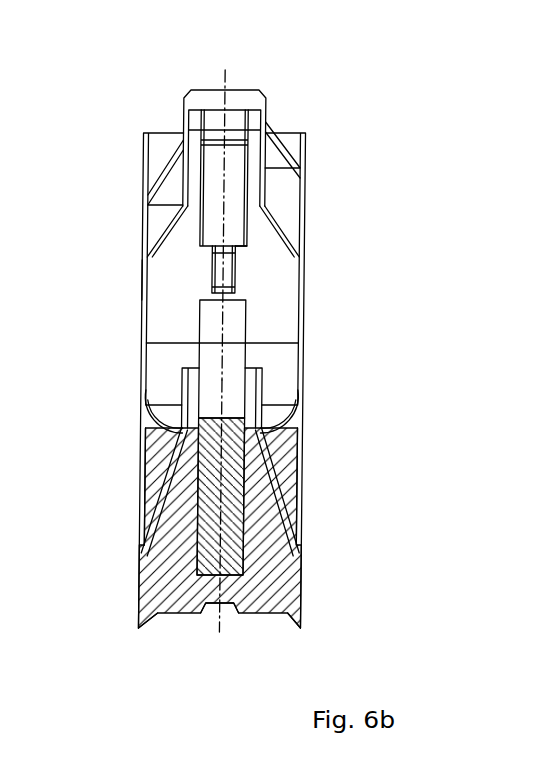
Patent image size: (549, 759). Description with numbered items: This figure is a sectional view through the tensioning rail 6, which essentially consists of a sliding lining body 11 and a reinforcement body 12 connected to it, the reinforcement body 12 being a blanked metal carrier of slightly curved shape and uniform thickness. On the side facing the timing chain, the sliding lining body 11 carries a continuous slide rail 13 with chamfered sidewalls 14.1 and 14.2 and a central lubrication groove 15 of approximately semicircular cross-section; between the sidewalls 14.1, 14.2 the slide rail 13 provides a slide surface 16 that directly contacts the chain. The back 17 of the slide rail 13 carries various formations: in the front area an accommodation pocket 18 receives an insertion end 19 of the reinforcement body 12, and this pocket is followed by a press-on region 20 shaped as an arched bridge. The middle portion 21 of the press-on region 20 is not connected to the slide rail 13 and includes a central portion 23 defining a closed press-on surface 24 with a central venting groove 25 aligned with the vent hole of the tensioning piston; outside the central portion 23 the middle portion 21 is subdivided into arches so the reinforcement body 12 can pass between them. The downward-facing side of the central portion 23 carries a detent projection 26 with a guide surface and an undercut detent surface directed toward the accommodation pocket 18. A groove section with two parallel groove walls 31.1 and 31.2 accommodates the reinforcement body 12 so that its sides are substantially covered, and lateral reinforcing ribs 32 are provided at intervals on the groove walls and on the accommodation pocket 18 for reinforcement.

The tensioning rail 6 is at (290, 125).
The sliding lining body 11 is at (309, 323).
The reinforcement body 12 is at (233, 497).
The slide rail 13 is at (307, 602).
The chamfered sidewall 14.1 is at (142, 622).
The chamfered sidewall 14.2 is at (293, 620).
The central lubrication groove 15 is at (216, 618).
The slide surface 16 is at (249, 614).
The back of the slide rail 17 is at (285, 202).
The accommodation pocket 18 is at (238, 81).
The insertion end 19 is at (207, 146).
The press-on region 20 is at (163, 312).
The middle portion 21 is at (141, 282).
The central portion 23 is at (248, 260).
The press-on surface 24 is at (269, 299).
The central venting groove 25 is at (217, 268).
The detent projection 26 is at (212, 335).
The groove wall 31.1 is at (148, 417).
The groove wall 31.2 is at (290, 438).
The lateral reinforcing ribs 32 is at (153, 170).